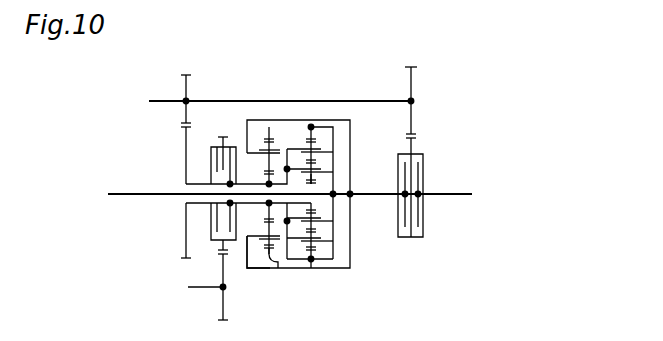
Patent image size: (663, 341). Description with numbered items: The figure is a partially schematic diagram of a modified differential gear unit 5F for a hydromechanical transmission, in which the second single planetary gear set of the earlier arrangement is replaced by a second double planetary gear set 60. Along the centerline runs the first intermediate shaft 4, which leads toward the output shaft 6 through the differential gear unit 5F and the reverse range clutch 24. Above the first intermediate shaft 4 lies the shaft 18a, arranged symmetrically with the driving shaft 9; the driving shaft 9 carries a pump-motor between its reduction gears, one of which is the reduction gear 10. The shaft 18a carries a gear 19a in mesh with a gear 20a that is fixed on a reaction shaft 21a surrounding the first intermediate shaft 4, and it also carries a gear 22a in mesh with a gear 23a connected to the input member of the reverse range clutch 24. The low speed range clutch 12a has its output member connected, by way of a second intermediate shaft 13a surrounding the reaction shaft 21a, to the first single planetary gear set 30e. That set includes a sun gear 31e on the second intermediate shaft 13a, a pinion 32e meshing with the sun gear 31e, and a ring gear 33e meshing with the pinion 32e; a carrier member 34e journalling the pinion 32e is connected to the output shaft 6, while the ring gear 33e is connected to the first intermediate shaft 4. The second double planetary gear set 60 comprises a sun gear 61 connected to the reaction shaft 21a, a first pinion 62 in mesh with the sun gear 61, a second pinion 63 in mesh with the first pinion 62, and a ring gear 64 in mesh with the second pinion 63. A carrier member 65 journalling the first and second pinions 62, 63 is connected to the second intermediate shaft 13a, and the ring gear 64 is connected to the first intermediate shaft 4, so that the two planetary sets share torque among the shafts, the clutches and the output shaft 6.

The first intermediate shaft 4 is at (120, 191).
The shaft 18a is at (280, 87).
The gear 19a is at (186, 77).
The low speed range clutch 12a is at (210, 147).
The reaction shaft 21a is at (186, 184).
The second intermediate shaft 13a is at (244, 185).
The gear 20a is at (186, 252).
The driving shaft 9 is at (199, 293).
The reduction gear 10 is at (230, 308).
The differential gear unit 5F is at (295, 104).
The first single planetary gear set 30e is at (268, 116).
The sun gear 31e is at (260, 227).
The second double planetary gear set 60 is at (314, 115).
The ring gear 64 is at (314, 129).
The second pinion 63 is at (322, 153).
The sun gear 61 is at (312, 184).
The carrier member 65 is at (314, 212).
The first pinion 62 is at (322, 233).
The carrier member 34e is at (311, 268).
The pinion 32e is at (266, 241).
The ring gear 33e is at (279, 268).
The gear 22a is at (421, 72).
The gear 23a is at (414, 137).
The reverse range clutch 24 is at (423, 161).
The output shaft 6 is at (444, 196).